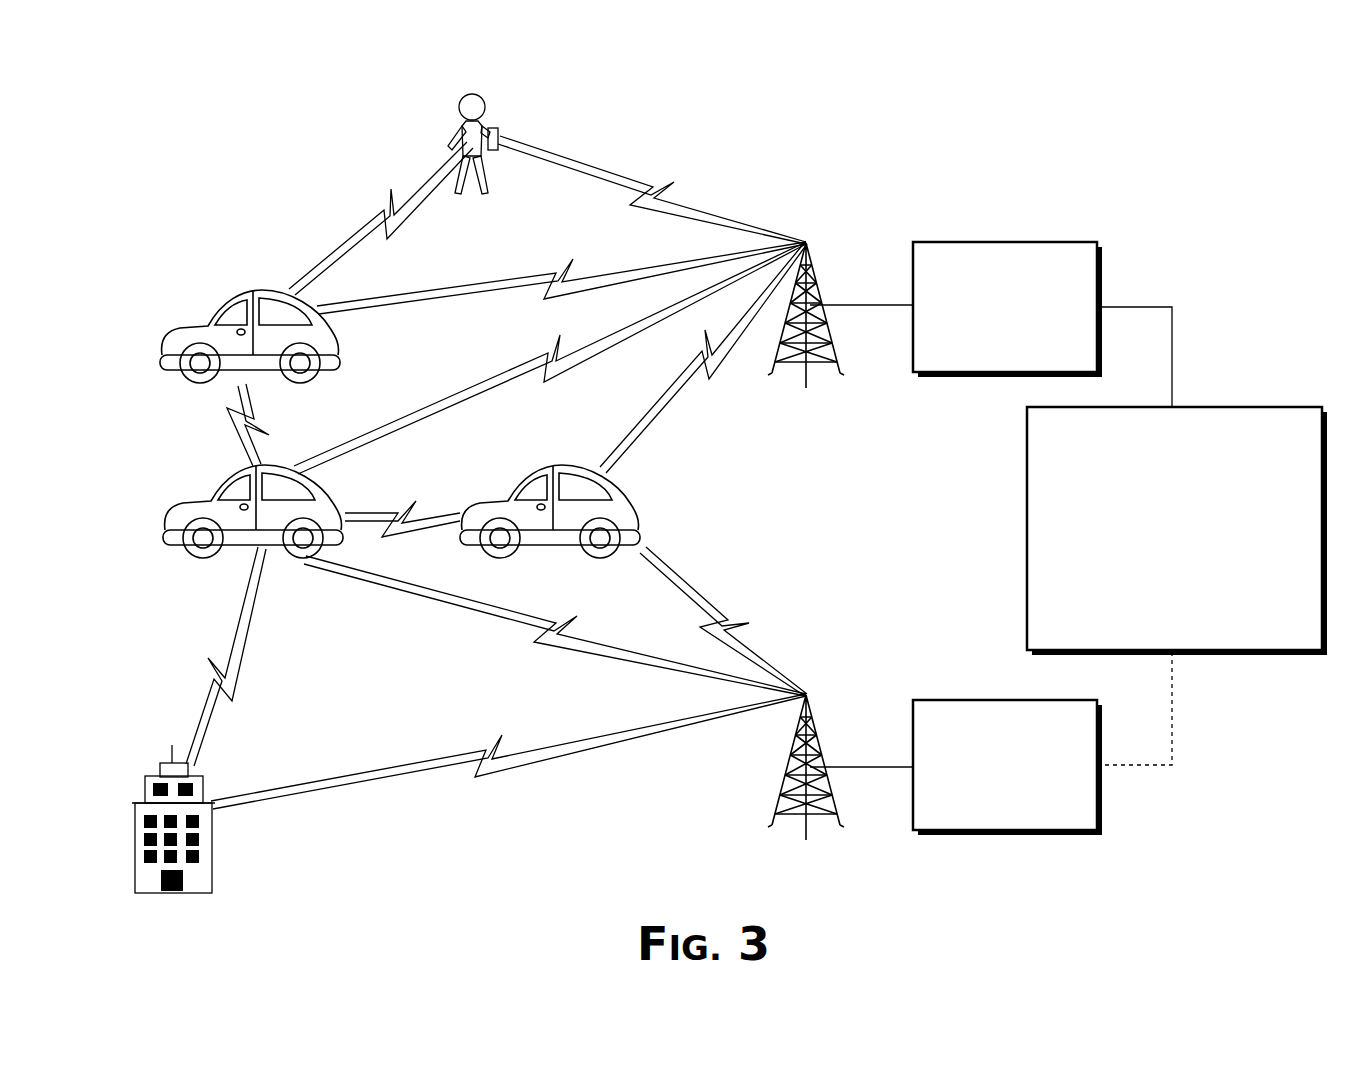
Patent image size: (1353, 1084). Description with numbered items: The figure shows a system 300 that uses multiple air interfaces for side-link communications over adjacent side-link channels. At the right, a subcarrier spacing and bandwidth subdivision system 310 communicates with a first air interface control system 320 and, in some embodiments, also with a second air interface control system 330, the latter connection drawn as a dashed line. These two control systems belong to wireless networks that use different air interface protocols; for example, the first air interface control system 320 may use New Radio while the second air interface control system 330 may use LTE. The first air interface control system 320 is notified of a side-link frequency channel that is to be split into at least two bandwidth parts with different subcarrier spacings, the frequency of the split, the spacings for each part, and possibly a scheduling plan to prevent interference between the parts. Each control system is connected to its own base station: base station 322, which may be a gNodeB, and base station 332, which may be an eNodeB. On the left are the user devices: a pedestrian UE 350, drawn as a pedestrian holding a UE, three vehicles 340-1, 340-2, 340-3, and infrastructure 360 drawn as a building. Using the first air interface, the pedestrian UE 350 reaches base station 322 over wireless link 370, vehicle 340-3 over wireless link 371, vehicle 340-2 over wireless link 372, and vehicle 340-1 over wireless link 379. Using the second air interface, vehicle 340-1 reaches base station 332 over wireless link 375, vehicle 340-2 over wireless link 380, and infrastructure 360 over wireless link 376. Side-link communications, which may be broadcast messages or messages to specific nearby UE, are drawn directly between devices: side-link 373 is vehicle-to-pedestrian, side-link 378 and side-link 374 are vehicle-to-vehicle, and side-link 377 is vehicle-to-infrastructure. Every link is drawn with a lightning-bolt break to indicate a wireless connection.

The system 300 is at (127, 156).
The subcarrier spacing and bandwidth subdivision system 310 is at (1290, 407).
The first air interface control system 320 is at (932, 241).
The base station 322 is at (820, 372).
The second air interface control system 330 is at (935, 700).
The base station 332 is at (784, 800).
The vehicle 340-1 is at (502, 478).
The vehicle 340-2 is at (166, 515).
The vehicle 340-3 is at (200, 303).
The pedestrian UE 350 is at (470, 93).
The infrastructure 360 is at (150, 795).
The wireless link 370 is at (650, 180).
The wireless link 371 is at (560, 262).
The wireless link 372 is at (545, 352).
The side-link 373 is at (370, 205).
The side-link 374 is at (405, 537).
The wireless link 375 is at (668, 570).
The wireless link 376 is at (498, 738).
The side-link 377 is at (210, 658).
The side-link 378 is at (230, 406).
The wireless link 379 is at (655, 396).
The wireless link 380 is at (355, 572).